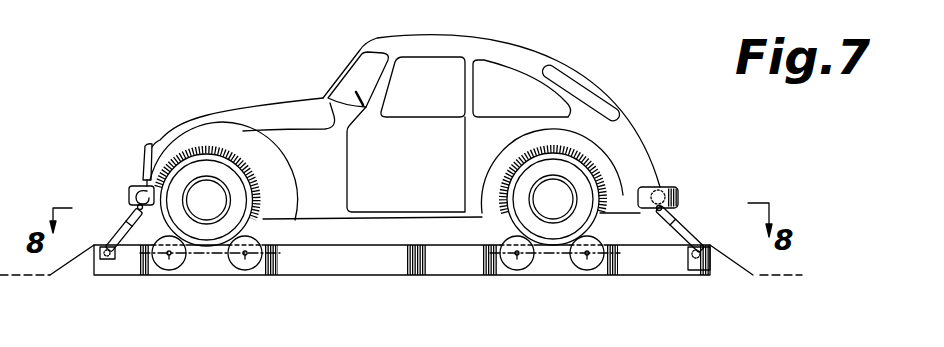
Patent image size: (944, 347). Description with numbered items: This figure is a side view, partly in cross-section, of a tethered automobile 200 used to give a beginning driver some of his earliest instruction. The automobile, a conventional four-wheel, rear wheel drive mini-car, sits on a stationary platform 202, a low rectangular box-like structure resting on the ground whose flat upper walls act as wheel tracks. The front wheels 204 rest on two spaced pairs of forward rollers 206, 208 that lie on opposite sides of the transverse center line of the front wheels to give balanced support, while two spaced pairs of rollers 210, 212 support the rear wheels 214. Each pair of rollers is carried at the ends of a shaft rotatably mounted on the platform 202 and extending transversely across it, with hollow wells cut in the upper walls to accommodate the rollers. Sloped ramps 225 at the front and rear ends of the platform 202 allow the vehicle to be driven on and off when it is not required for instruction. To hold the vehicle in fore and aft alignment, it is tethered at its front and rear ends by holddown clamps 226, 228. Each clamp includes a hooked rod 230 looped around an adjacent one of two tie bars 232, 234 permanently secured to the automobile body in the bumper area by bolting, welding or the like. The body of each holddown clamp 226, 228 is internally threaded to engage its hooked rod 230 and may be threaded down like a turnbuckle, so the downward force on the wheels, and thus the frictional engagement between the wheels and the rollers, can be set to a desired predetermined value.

The tethered automobile 200 is at (531, 47).
The platform 202 is at (340, 262).
The front wheels 204 is at (245, 200).
The forward rollers 206 is at (173, 267).
The forward rollers 208 is at (247, 267).
The rollers 210 is at (517, 267).
The rollers 212 is at (590, 267).
The rear wheels 214 is at (587, 173).
The sloped ramps 225 is at (77, 267).
The holddown clamp 226 is at (115, 231).
The holddown clamp 228 is at (688, 222).
The hooked rod 230 is at (135, 206).
The tie bar 232 is at (130, 187).
The tie bar 234 is at (677, 185).